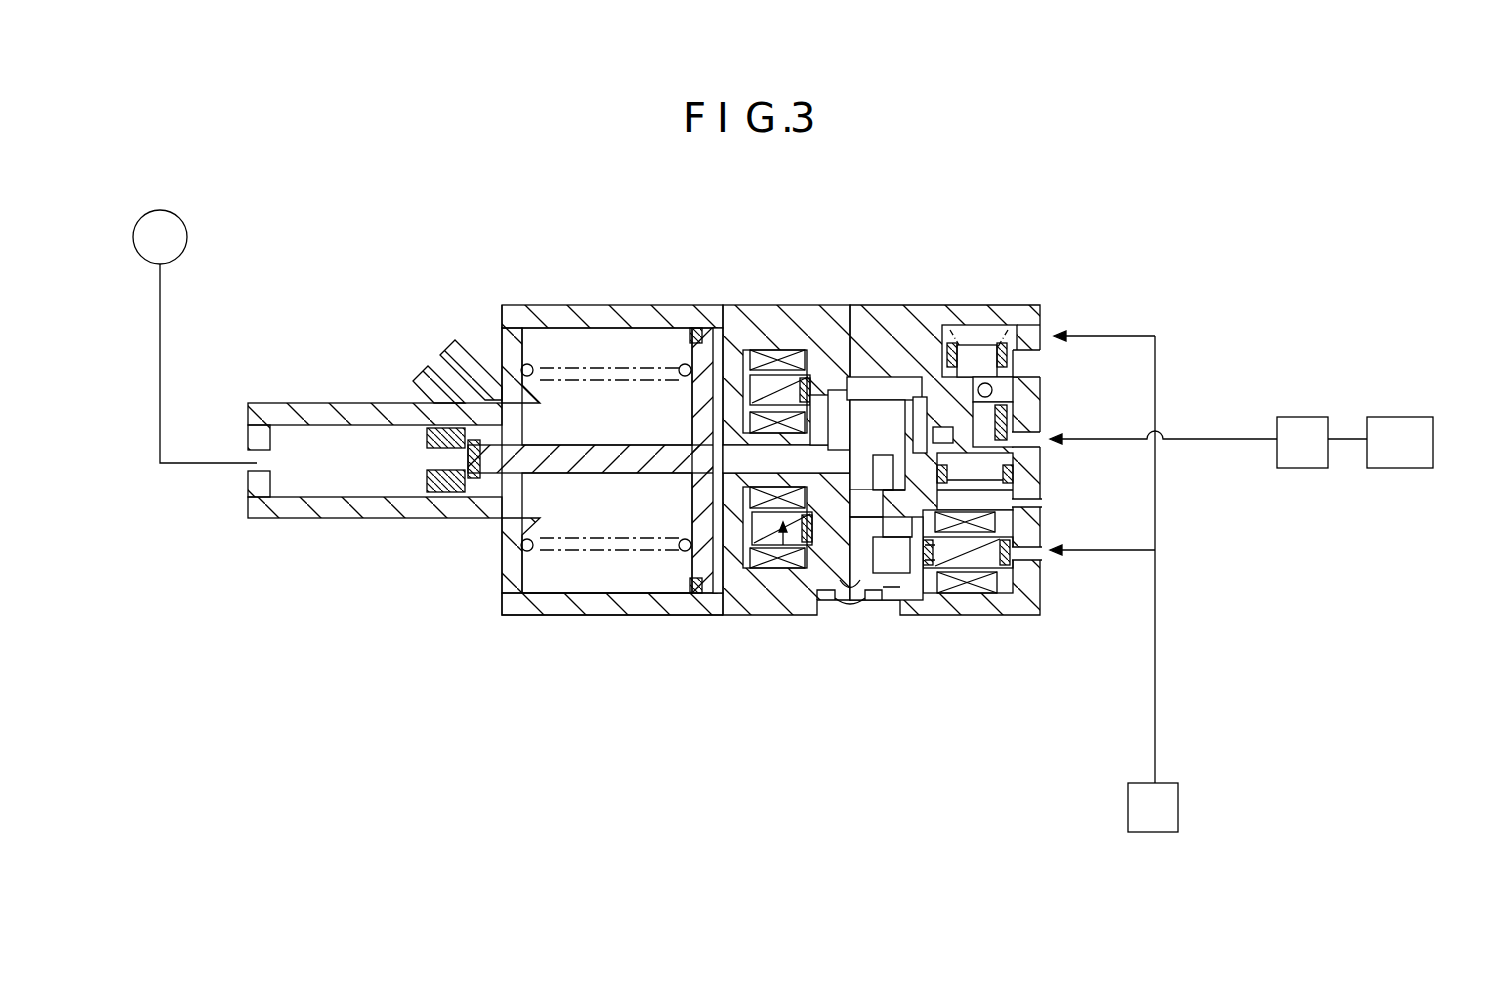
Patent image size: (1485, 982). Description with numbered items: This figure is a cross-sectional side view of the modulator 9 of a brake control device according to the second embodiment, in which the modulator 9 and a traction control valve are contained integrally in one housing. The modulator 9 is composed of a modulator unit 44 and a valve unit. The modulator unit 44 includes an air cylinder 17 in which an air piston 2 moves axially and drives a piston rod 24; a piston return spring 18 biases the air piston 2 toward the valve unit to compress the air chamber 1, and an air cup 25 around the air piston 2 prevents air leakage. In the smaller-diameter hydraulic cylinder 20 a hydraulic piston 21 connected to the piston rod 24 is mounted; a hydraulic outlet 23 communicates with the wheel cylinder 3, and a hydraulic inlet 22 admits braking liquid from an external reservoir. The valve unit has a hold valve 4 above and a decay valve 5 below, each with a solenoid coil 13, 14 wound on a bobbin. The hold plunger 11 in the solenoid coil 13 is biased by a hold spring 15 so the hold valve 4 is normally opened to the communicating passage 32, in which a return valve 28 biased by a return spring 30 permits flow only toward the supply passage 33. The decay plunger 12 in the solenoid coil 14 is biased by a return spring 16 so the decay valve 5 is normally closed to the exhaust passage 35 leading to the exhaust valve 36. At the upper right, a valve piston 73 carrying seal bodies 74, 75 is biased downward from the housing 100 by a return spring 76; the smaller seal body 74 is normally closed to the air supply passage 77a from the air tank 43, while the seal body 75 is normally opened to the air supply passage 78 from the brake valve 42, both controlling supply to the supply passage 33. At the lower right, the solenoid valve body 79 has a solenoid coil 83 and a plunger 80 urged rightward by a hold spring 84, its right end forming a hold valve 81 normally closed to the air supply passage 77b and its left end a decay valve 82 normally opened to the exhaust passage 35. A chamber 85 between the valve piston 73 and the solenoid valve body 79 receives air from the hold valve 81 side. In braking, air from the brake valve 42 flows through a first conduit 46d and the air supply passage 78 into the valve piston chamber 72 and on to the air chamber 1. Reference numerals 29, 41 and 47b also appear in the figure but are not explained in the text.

The air chamber 1 is at (716, 330).
The air piston 2 is at (677, 340).
The wheel cylinder 3 is at (188, 240).
The hold valve 4 is at (752, 386).
The decay valve 5 is at (745, 600).
The modulator 9 is at (602, 262).
The hold plunger 11 is at (797, 350).
The decay plunger 12 is at (773, 603).
The solenoid coil 13 is at (770, 350).
The solenoid coil 14 is at (752, 600).
The hold spring 15 is at (818, 350).
The return spring 16 is at (703, 615).
The air cylinder 17 is at (566, 588).
The piston return spring 18 is at (540, 320).
The hydraulic cylinder 20 is at (330, 425).
The hydraulic piston 21 is at (427, 473).
The hydraulic inlet 22 is at (440, 368).
The hydraulic outlet 23 is at (258, 472).
The piston rod 24 is at (578, 457).
The air cup 25 is at (695, 330).
The return valve 28 is at (878, 380).
The valve seat 29 is at (848, 390).
The return spring 30 is at (900, 380).
The communicating passage 32 is at (915, 397).
The supply passage 33 is at (940, 377).
The exhaust passage 35 is at (856, 625).
The exhaust valve 36 is at (837, 603).
The controller 41 is at (1410, 424).
The brake valve 42 is at (1302, 430).
The air tank 43 is at (1165, 808).
The modulator unit 44 is at (503, 622).
The first conduit 46d is at (1228, 441).
The hydraulic line 47b is at (1157, 702).
The valve piston chamber 72 is at (1040, 406).
The valve piston 73 is at (985, 335).
The seal body 74 is at (1040, 373).
The seal body 75 is at (1040, 457).
The return spring 76 is at (950, 328).
The air supply passage 77a is at (1062, 322).
The air supply passage 77b is at (1040, 556).
The air supply passage 78 is at (1042, 440).
The solenoid valve body 79 is at (1006, 596).
The plunger 80 is at (985, 600).
The hold valve 81 is at (1035, 590).
The decay valve 82 is at (928, 598).
The solenoid coil 83 is at (955, 598).
The hold spring 84 is at (892, 598).
The chamber 85 is at (1040, 504).
The housing 100 is at (1012, 320).